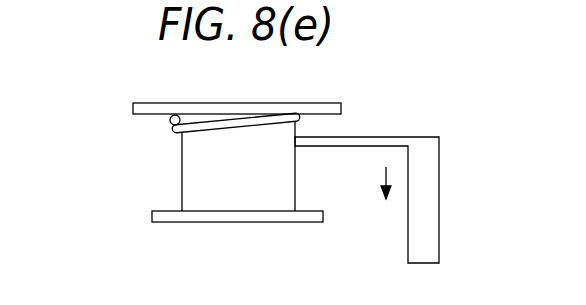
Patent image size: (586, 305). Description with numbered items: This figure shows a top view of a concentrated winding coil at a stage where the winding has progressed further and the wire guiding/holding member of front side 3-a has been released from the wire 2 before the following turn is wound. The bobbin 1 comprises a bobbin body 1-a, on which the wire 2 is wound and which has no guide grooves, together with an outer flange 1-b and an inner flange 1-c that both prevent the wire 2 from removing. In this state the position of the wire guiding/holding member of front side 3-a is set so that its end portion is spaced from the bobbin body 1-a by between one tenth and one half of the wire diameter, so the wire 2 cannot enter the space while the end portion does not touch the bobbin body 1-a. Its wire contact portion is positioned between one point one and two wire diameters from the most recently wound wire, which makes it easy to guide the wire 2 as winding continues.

The bobbin 1 is at (58, 93).
The outer flange 1-b is at (137, 110).
The bobbin body 1-a is at (192, 167).
The inner flange 1-c is at (160, 216).
The wire 2 is at (292, 119).
The wire guiding/holding member of front side 3-a is at (432, 170).